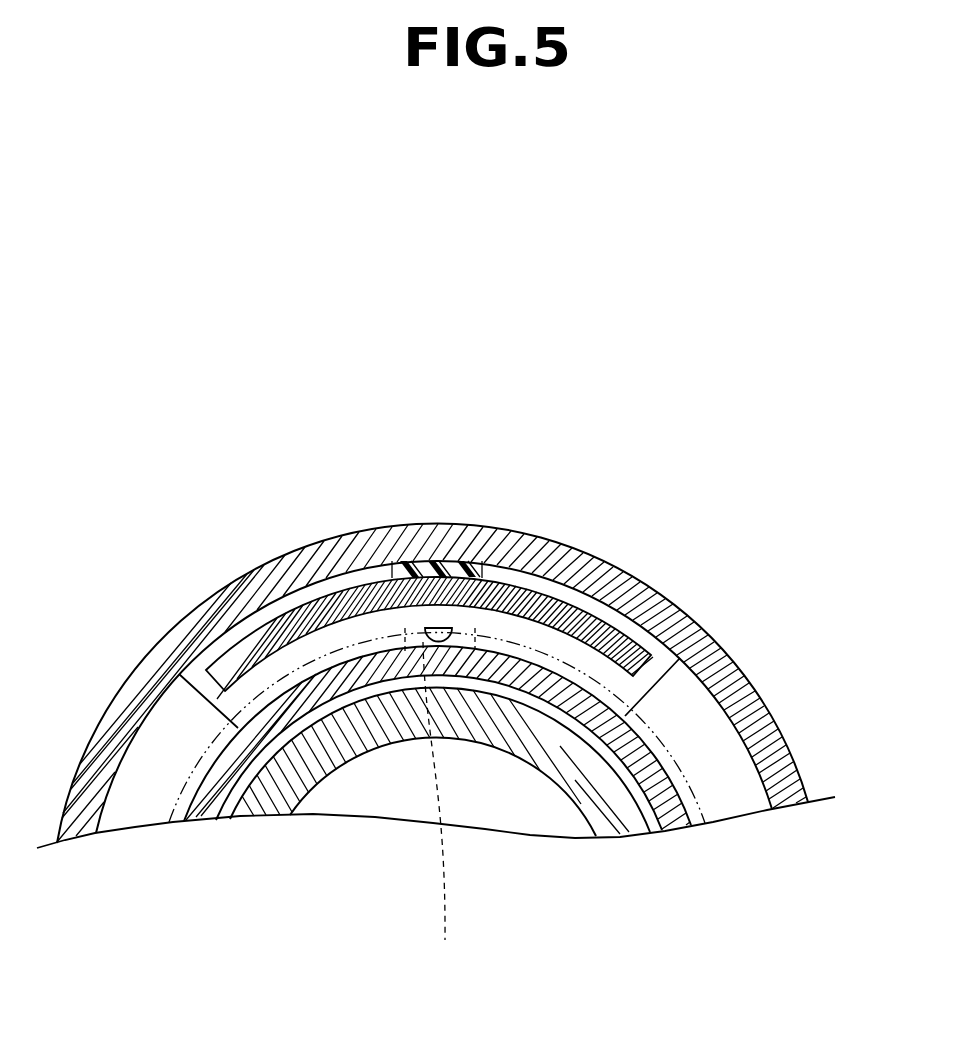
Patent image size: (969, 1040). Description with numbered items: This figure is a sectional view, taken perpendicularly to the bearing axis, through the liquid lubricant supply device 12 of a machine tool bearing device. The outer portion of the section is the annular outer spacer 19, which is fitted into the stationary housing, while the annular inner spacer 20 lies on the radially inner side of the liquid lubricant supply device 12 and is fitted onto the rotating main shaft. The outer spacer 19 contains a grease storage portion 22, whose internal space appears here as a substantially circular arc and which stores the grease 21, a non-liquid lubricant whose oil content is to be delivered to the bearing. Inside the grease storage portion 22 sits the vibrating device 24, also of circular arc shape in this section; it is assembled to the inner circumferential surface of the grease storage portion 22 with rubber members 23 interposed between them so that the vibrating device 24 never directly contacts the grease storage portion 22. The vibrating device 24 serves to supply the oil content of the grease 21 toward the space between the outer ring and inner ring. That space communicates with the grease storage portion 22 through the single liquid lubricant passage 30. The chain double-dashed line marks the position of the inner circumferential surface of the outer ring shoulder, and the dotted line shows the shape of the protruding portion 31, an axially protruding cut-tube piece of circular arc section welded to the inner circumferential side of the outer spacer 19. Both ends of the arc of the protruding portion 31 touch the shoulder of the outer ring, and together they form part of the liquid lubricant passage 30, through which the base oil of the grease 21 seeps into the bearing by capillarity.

The liquid lubricant supply device 12 is at (487, 512).
The outer spacer 19 is at (613, 575).
The inner spacer 20 is at (473, 723).
The grease 21 is at (547, 627).
The grease storage portion 22 is at (335, 583).
The rubber members 23 is at (423, 562).
The vibrating device 24 is at (457, 567).
The liquid lubricant passage 30 is at (426, 629).
The protruding portion 31 is at (438, 808).